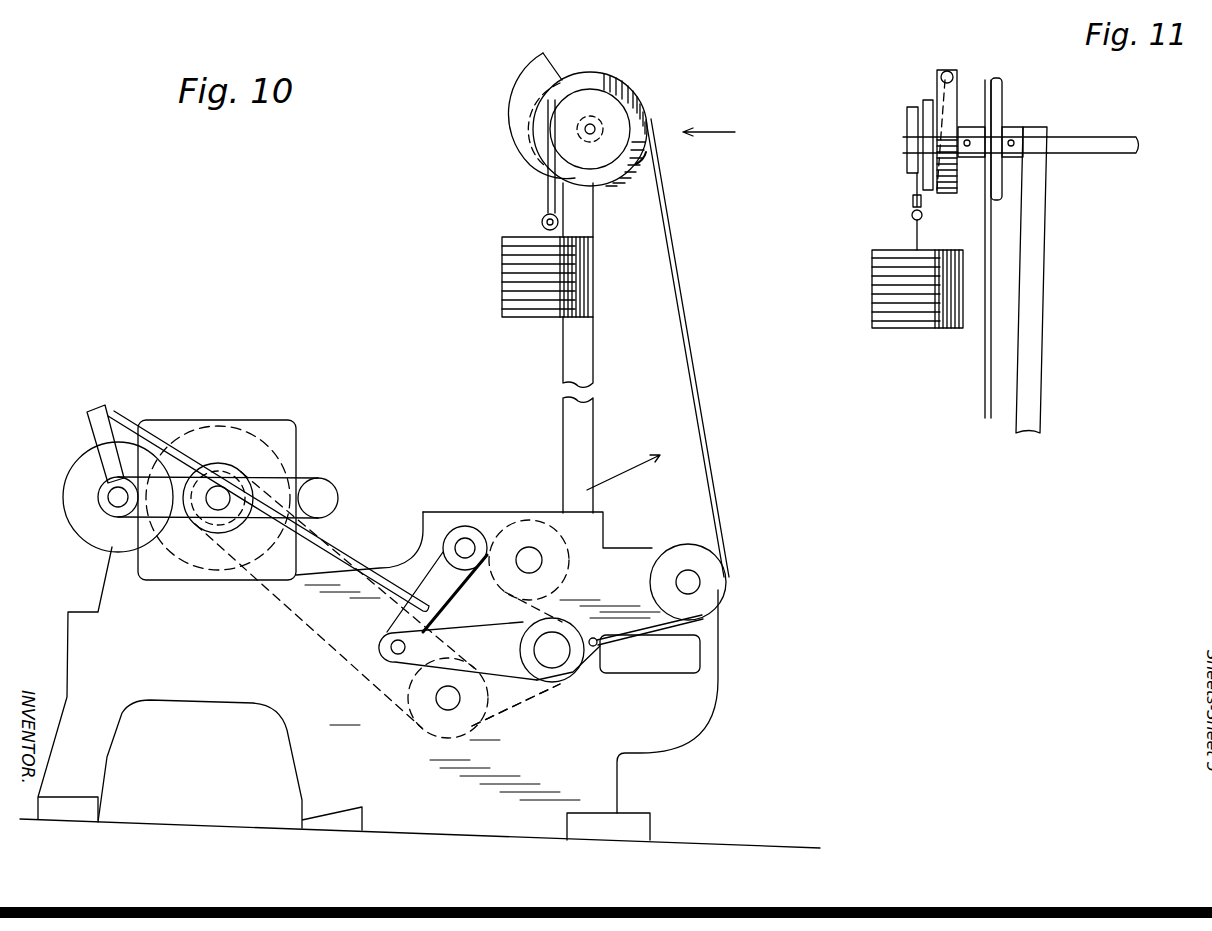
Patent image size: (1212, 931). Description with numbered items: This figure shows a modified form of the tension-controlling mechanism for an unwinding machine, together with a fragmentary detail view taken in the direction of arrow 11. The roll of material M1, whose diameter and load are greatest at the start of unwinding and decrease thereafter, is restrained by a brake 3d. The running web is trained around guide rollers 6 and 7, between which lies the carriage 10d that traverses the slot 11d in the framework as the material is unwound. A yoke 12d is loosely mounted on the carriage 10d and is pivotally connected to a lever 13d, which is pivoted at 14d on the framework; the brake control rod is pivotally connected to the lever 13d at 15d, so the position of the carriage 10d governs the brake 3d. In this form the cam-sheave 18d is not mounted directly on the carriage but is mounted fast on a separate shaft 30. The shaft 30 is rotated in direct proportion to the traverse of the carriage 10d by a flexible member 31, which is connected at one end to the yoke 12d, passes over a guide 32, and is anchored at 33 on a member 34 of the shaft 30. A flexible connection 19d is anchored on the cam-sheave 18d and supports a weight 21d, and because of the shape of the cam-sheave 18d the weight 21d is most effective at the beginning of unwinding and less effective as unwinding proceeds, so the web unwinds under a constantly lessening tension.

In FIG. 10, the brake 3d is at (80, 521).
In FIG. 10, the guide roller 6 is at (523, 526).
In FIG. 10, the guide roller 7 is at (445, 722).
In FIG. 10, the carriage 10d is at (554, 647).
In FIG. 10, the arrow 11 is at (709, 122).
In FIG. 10, the slot 11d is at (625, 665).
In FIG. 10, the yoke 12d is at (497, 700).
In FIG. 10, the lever 13d is at (393, 640).
In FIG. 10, the pivot 14d is at (469, 540).
In FIG. 10, the pivotal connection 15d is at (437, 614).
In FIG. 10, the cam-sheave 18d is at (517, 135).
In FIG. 11, the cam-sheave 18d is at (940, 78).
In FIG. 10, the flexible connection 19d is at (545, 191).
In FIG. 11, the flexible connection 19d is at (912, 192).
In FIG. 10, the weight 21d is at (500, 312).
In FIG. 11, the weight 21d is at (870, 306).
In FIG. 10, the shaft 30 is at (594, 126).
In FIG. 11, the shaft 30 is at (1100, 137).
In FIG. 10, the flexible member 31 is at (706, 437).
In FIG. 11, the flexible member 31 is at (983, 375).
In FIG. 10, the guide 32 is at (712, 566).
In FIG. 10, the anchor 33 is at (638, 168).
In FIG. 11, the anchor 33 is at (985, 160).
In FIG. 10, the member 34 is at (598, 74).
In FIG. 11, the member 34 is at (1005, 92).
In FIG. 10, the material M1 is at (246, 436).